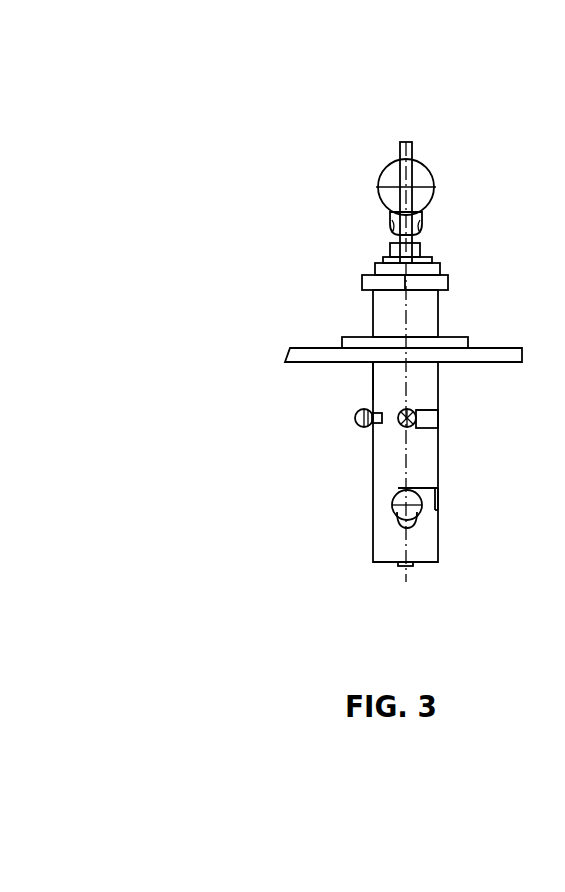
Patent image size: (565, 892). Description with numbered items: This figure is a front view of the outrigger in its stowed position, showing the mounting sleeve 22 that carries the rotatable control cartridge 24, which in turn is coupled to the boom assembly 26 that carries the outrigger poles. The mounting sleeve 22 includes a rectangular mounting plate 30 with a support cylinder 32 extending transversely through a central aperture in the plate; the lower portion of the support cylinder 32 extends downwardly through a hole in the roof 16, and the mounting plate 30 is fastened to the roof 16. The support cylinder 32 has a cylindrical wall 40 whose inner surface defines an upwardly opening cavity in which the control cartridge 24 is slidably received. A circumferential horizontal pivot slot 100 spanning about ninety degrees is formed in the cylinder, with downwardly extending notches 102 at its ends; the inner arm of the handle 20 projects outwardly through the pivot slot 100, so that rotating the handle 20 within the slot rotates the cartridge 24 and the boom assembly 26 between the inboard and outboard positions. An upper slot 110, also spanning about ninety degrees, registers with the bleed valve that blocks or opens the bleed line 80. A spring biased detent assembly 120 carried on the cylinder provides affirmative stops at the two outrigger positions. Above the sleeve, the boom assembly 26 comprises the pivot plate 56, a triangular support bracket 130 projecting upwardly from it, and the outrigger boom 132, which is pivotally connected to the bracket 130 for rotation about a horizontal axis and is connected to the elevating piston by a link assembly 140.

The roof 16 is at (300, 348).
The handle 20 is at (381, 512).
The mounting sleeve 22 is at (366, 468).
The control cartridge 24 is at (559, 599).
The boom assembly 26 is at (431, 159).
The mounting plate 30 is at (365, 301).
The support cylinder 32 is at (373, 553).
The cylindrical wall 40 is at (393, 383).
The pivot plate 56 is at (345, 235).
The bleed line 80 is at (490, 391).
The pivot slot 100 is at (475, 566).
The notches 102 is at (403, 523).
The upper slot 110 is at (477, 436).
The detent assembly 120 is at (353, 418).
The support bracket 130 is at (548, 154).
The outrigger boom 132 is at (331, 166).
The link assembly 140 is at (430, 237).